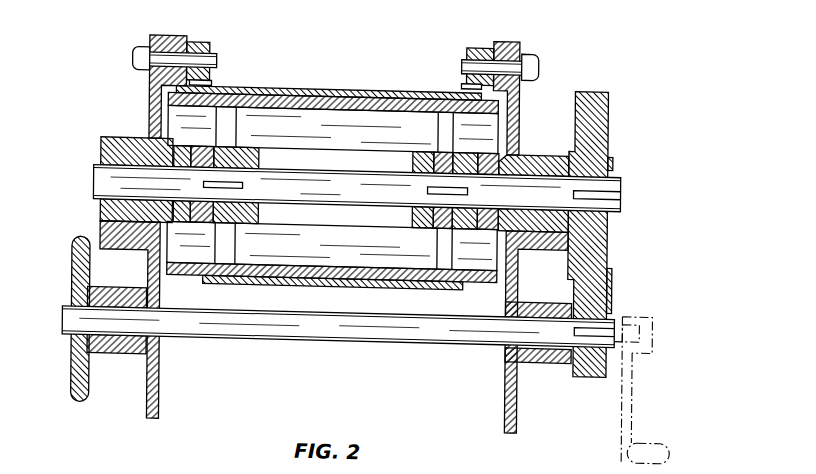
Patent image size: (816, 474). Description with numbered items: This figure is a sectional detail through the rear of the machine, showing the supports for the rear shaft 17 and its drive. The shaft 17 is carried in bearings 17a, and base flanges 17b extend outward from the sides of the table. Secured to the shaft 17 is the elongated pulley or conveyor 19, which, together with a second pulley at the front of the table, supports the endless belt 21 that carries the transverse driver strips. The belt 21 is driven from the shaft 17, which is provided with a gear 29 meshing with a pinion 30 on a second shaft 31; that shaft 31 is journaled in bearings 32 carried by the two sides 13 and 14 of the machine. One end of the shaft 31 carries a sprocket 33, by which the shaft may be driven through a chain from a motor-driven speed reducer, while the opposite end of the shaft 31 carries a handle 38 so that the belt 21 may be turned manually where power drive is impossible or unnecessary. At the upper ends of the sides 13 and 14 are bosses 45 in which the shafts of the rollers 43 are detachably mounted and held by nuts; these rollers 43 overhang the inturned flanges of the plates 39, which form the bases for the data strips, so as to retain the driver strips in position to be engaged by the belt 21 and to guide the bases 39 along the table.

The side 13 is at (505, 385).
The side 14 is at (160, 395).
The shaft 17 is at (353, 196).
The bearing 17a is at (133, 143).
The base flange 17b is at (109, 257).
The elongated pulley or conveyor 19 is at (333, 112).
The endless belt 21 is at (303, 285).
The gear 29 is at (600, 131).
The pinion 30 is at (607, 296).
The shaft 31 is at (370, 336).
The bearing 32 is at (119, 360).
The sprocket 33 is at (72, 388).
The handle 38 is at (628, 381).
The plate 39 is at (312, 90).
The roller 43 is at (208, 48).
The boss 45 is at (162, 40).